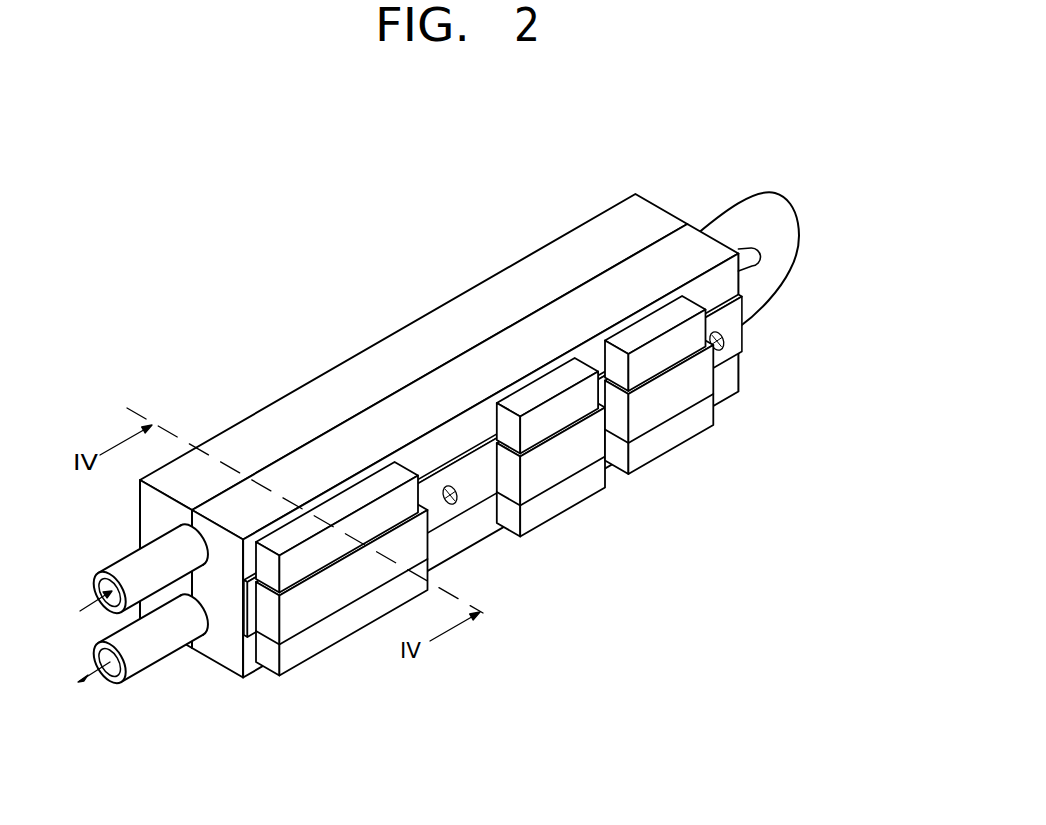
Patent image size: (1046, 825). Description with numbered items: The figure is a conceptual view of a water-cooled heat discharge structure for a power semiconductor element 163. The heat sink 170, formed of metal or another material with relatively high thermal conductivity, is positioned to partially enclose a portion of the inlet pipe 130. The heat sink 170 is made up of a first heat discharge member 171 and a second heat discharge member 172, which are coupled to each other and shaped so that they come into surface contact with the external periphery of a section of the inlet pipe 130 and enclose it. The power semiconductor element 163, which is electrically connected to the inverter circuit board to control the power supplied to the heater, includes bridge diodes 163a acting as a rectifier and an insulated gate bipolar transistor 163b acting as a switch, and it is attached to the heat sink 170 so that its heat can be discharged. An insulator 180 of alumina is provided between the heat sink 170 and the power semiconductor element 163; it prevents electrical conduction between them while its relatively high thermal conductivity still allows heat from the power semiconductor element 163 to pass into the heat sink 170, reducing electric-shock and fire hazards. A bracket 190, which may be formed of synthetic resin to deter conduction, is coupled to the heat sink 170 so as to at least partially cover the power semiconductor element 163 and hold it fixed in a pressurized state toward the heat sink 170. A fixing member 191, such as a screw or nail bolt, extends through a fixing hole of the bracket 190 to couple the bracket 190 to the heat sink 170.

The inlet pipe 130 is at (131, 568).
The power semiconductor element 163 is at (501, 432).
The bridge diodes 163a is at (382, 514).
The insulated gate bipolar transistor 163b is at (590, 382).
The heat sink 170 is at (450, 386).
The first heat discharge member 171 is at (652, 271).
The second heat discharge member 172 is at (612, 226).
The insulator 180 is at (257, 646).
The bracket 190 is at (565, 452).
The fixing member 191 is at (452, 486).